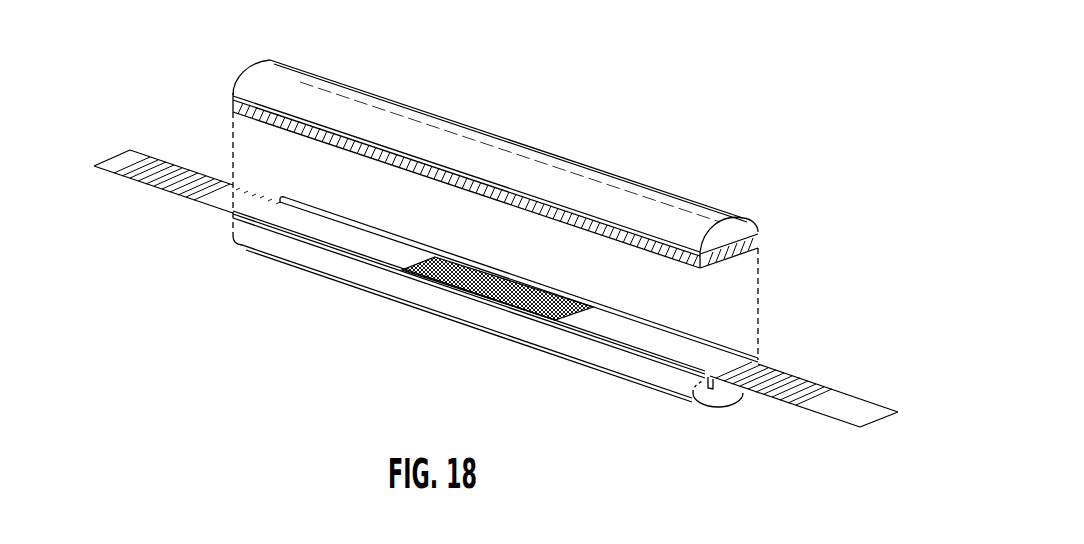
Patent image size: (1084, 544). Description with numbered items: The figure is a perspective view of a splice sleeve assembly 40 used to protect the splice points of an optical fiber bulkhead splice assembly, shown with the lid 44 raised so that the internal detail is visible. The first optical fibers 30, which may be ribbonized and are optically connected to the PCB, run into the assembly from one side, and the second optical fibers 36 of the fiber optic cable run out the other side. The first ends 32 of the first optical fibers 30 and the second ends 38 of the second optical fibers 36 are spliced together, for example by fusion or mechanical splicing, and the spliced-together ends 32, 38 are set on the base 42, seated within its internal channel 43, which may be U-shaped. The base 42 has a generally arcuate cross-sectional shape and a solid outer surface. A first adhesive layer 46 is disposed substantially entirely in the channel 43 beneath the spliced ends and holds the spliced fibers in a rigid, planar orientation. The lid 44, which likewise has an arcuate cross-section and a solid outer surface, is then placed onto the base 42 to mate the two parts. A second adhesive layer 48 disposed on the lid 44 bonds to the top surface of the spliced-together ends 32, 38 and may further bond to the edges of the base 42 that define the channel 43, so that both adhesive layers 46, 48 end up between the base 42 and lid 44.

The first optical fibers 30 is at (202, 206).
The first ends 32 is at (445, 288).
The second optical fibers 36 is at (830, 382).
The second ends 38 is at (530, 320).
The splice sleeve assembly 40 is at (524, 210).
The base 42 is at (498, 334).
The internal channel 43 is at (700, 384).
The lid 44 is at (617, 192).
The first adhesive layer 46 is at (727, 393).
The second adhesive layer 48 is at (742, 258).